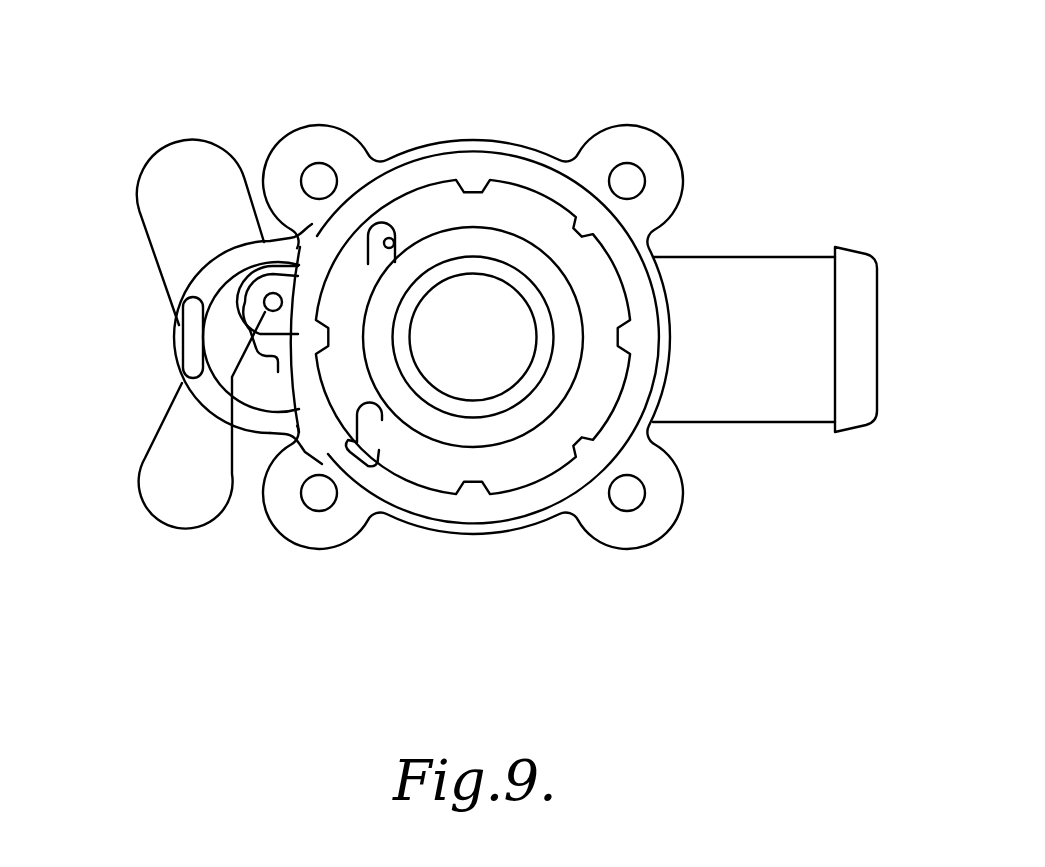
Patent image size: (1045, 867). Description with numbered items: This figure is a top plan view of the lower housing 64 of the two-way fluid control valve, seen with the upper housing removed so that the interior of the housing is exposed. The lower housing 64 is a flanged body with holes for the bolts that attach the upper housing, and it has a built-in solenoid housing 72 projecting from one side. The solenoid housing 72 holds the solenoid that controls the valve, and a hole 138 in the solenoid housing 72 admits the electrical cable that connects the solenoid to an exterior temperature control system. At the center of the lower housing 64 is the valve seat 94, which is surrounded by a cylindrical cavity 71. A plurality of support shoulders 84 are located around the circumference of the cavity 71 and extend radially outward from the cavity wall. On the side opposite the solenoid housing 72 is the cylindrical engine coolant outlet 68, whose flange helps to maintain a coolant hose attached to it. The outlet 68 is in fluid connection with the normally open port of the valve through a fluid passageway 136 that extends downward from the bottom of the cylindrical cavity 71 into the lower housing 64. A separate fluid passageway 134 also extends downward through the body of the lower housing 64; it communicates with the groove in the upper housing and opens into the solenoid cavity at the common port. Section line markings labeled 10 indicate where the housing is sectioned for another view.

The section line 10- 10 is at (98, 403).
The valve body flange 64 is at (428, 147).
The outlet hose connector 68 is at (787, 423).
The locating boss 71 is at (400, 445).
The handle 72 is at (176, 323).
The notches 84 is at (474, 180).
The inner bore ring 94 is at (518, 397).
The pivot pin 134 is at (270, 434).
The detent hole 136 is at (387, 238).
The slot 138 is at (185, 357).